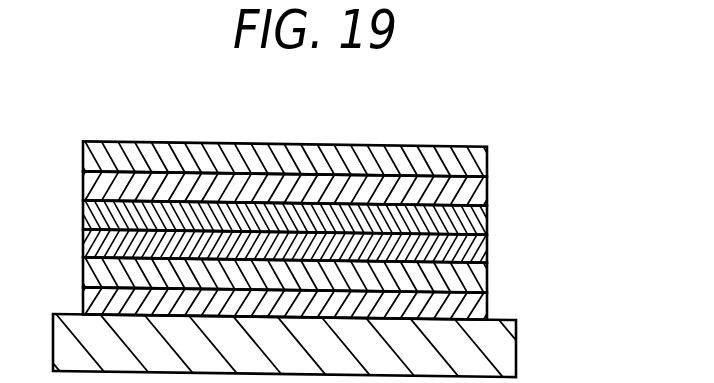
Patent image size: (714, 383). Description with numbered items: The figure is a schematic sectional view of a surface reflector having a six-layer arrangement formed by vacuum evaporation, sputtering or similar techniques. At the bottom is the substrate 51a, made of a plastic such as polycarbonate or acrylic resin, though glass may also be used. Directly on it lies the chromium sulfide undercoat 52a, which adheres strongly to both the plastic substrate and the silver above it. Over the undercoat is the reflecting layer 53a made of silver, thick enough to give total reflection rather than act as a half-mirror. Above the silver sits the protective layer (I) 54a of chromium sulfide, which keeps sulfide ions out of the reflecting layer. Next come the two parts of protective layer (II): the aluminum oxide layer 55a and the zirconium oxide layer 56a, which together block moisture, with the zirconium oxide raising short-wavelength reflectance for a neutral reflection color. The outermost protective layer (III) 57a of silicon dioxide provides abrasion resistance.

The substrate 51a is at (516, 338).
The chromium sulfide undercoat 52a is at (487, 301).
The reflecting layer 53a is at (487, 272).
The protective layer (I) 54a is at (487, 245).
The aluminum oxide layer 55a is at (487, 215).
The zirconium oxide layer 56a is at (487, 187).
The protective layer (III) 57a is at (487, 157).